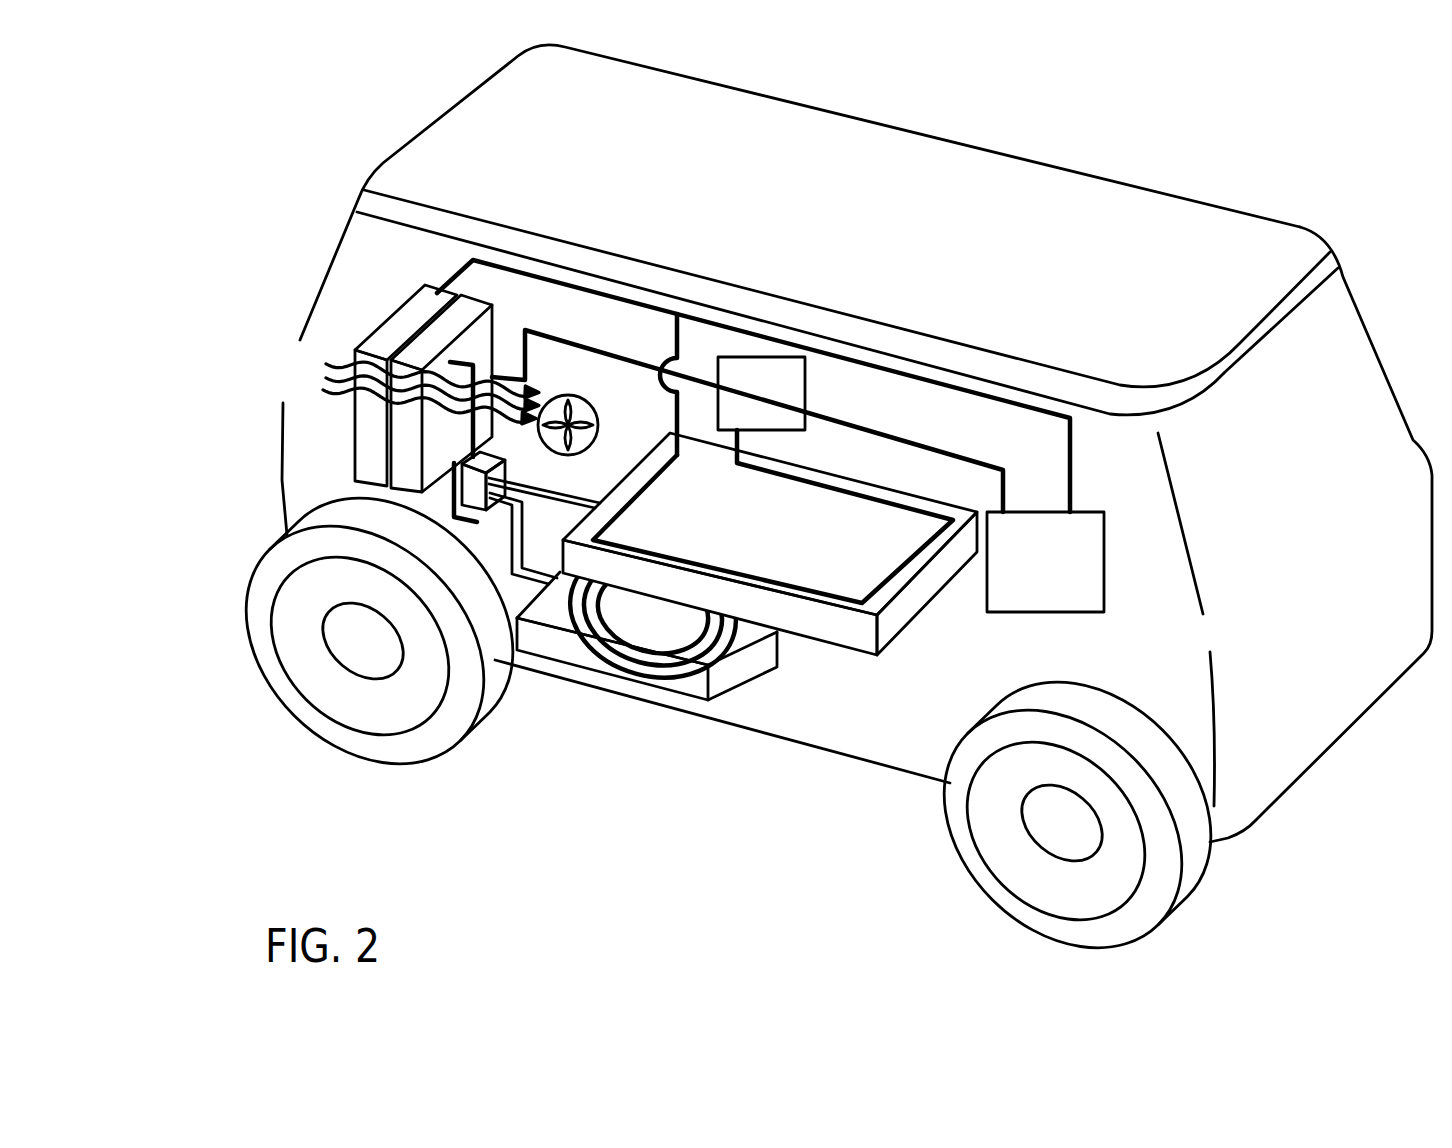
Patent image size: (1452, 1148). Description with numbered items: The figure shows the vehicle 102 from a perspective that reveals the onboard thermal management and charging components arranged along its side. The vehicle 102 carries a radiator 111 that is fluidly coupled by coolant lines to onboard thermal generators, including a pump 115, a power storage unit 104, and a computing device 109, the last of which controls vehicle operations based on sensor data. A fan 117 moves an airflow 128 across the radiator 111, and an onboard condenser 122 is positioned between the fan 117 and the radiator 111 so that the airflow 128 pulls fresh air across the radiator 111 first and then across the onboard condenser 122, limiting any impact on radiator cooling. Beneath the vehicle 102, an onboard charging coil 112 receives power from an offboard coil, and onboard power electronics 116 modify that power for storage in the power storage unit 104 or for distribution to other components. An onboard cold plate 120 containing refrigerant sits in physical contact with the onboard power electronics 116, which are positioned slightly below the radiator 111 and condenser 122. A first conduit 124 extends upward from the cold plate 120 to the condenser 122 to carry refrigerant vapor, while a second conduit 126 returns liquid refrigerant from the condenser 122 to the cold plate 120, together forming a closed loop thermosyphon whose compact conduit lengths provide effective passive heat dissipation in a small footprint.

The vehicle 102 is at (847, 123).
The power storage unit 104 is at (770, 542).
The computing device 109 is at (1045, 562).
The radiator 111 is at (334, 360).
The onboard charging coil 112 is at (645, 662).
The pump 115 is at (761, 393).
The onboard power electronics 116 is at (335, 589).
The fan 117 is at (592, 421).
The onboard cold plate 120 is at (317, 525).
The onboard condenser 122 is at (316, 393).
The first conduit 124 is at (544, 469).
The second conduit 126 is at (479, 463).
The airflow 128 is at (394, 388).